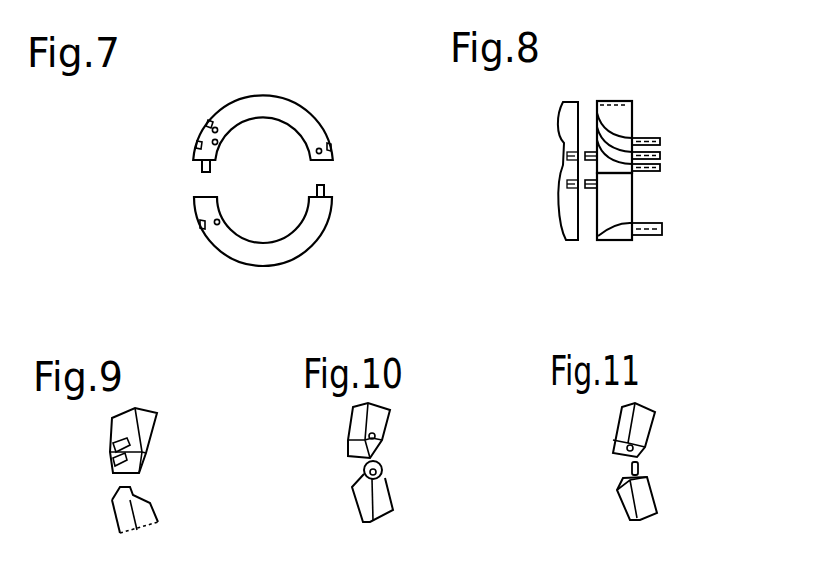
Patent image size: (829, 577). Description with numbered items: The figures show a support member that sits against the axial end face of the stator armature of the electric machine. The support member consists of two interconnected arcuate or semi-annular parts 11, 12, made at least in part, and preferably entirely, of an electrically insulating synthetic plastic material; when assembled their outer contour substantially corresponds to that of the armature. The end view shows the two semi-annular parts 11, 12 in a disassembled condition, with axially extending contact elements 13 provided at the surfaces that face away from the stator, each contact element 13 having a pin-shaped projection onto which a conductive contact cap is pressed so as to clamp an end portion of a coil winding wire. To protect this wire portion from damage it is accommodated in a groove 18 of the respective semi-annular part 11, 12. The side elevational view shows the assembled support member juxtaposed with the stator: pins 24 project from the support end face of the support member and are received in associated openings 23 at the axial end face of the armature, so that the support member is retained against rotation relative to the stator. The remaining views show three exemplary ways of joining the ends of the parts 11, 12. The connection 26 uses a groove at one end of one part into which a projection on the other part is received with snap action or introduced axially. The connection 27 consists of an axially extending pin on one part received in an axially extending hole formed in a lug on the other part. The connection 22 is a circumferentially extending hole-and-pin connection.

In FIG. 7, the semi-annular part 11 is at (301, 126).
In FIG. 8, the semi-annular part 11 is at (617, 116).
In FIG. 11, the semi-annular part 11 is at (640, 428).
In FIG. 7, the semi-annular part 12 is at (318, 219).
In FIG. 8, the semi-annular part 12 is at (613, 202).
In FIG. 11, the semi-annular part 12 is at (640, 500).
In FIG. 7, the contact element 13 is at (199, 143).
In FIG. 8, the contact element 13 is at (662, 156).
In FIG. 7, the groove 18 is at (196, 150).
In FIG. 8, the groove 18 is at (618, 228).
In FIG. 11, the connection 22 is at (650, 464).
In FIG. 8, the opening 23 is at (560, 158).
In FIG. 8, the pin 24 is at (588, 150).
In FIG. 9, the connection 26 is at (140, 482).
In FIG. 10, the connection 27 is at (393, 458).